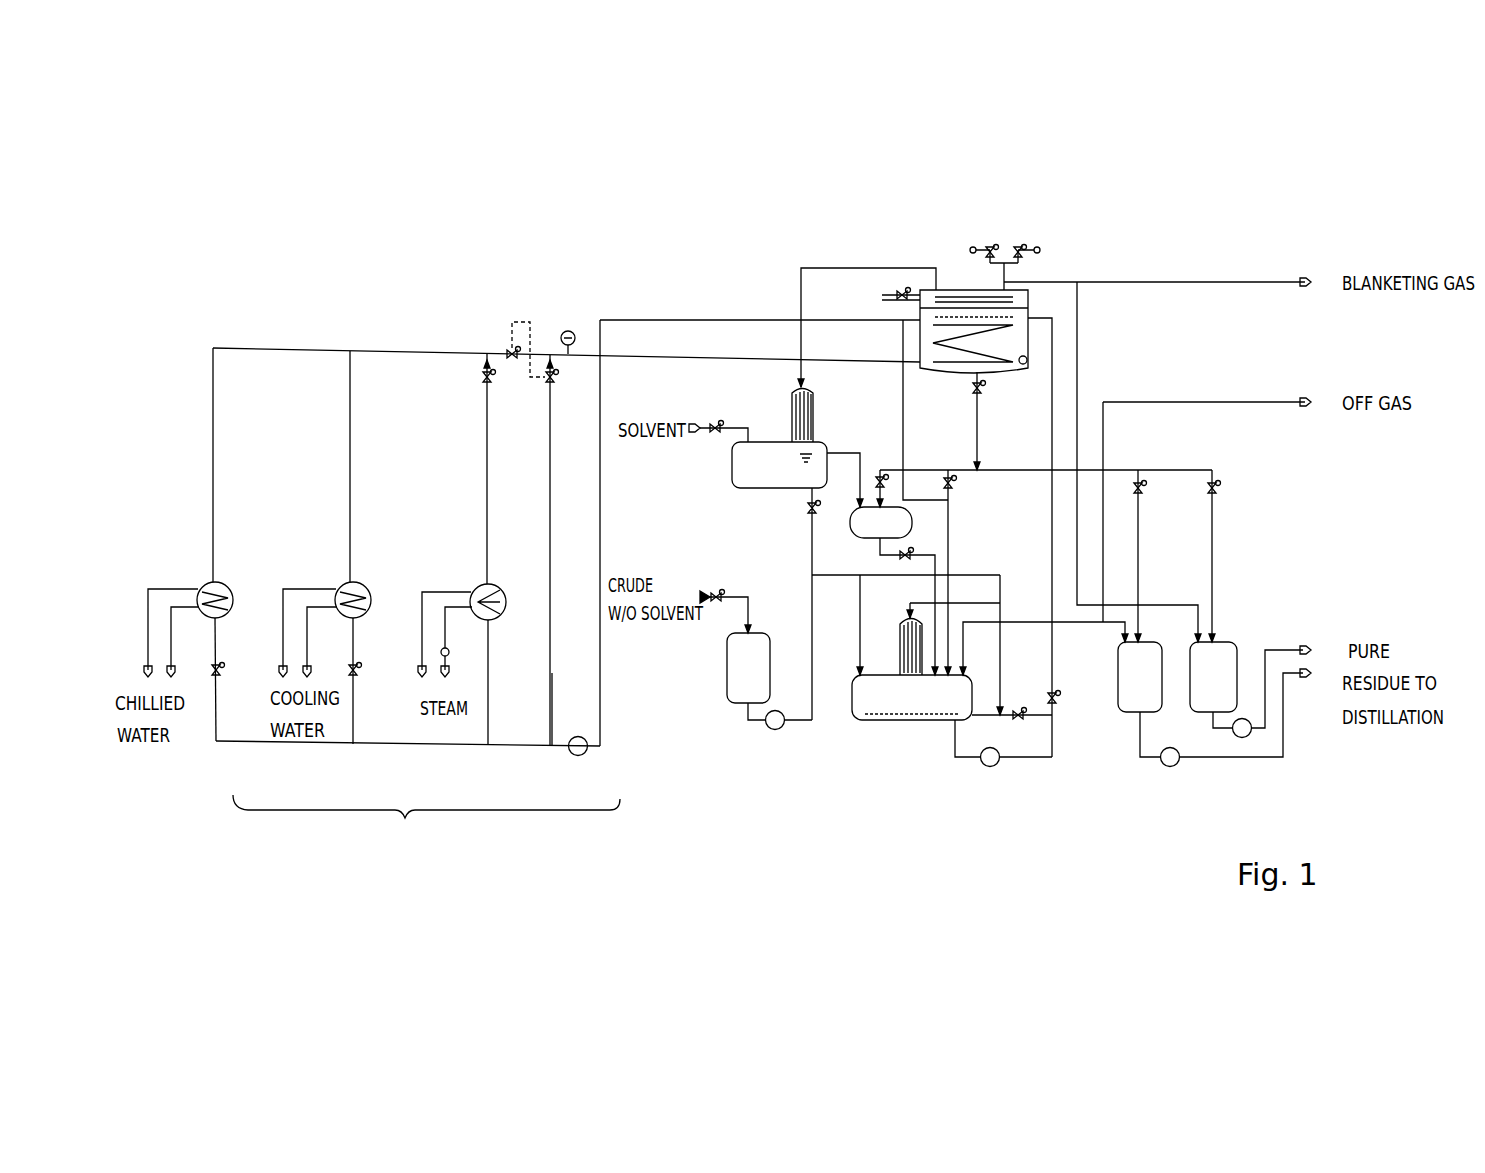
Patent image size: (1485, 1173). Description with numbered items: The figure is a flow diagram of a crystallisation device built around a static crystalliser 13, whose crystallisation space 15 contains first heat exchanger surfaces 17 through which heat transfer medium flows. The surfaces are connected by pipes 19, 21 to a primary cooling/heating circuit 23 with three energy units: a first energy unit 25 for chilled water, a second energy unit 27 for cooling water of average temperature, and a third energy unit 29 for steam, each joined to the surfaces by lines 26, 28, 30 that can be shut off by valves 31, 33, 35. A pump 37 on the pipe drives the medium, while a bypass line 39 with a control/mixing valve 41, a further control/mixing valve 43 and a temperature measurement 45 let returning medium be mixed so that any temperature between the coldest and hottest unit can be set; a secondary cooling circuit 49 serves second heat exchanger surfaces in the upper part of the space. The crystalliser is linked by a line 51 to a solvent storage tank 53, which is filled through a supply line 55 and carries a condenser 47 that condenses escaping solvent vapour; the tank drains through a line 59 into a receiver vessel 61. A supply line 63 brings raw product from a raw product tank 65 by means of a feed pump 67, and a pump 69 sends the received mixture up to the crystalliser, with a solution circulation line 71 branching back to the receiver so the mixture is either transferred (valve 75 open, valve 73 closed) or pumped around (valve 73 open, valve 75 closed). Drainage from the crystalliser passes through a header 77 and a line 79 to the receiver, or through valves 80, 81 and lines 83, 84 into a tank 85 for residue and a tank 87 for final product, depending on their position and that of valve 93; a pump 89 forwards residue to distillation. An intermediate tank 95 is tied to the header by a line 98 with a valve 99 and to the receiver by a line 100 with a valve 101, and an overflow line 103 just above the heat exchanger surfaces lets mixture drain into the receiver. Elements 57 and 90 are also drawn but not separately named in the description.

The static crystalliser 13 is at (1028, 340).
The crystallisation space 15 is at (1028, 367).
The first heat exchanger surfaces 17 is at (985, 363).
The pipe 19 is at (916, 410).
The pipe 21 is at (605, 560).
The primary cooling/heating circuit 23 is at (418, 804).
The first energy unit 25 is at (230, 588).
The line 26 is at (213, 483).
The second energy unit 27 is at (370, 590).
The line 28 is at (350, 493).
The third energy unit 29 is at (498, 590).
The line 30 is at (487, 490).
The valve 31 is at (222, 675).
The valve 33 is at (360, 673).
The valve 35 is at (482, 377).
The pump 37 is at (587, 755).
The bypass line 39 is at (552, 673).
The control/mixing valve 41 is at (556, 377).
The control/mixing valve 43 is at (505, 348).
The temperature measurement 45 is at (565, 328).
The condenser 47 is at (960, 288).
The secondary cooling circuit 49 is at (890, 288).
The line 51 is at (797, 290).
The solvent storage tank 53 is at (730, 475).
The supply line 55 is at (713, 418).
The condenser 57 is at (815, 410).
The line 59 is at (812, 548).
The receiver vessel 61 is at (850, 697).
The supply line 63 is at (812, 627).
The raw product tank 65 is at (722, 672).
The feed pump 67 is at (1052, 540).
The pump 69 is at (998, 763).
The solution circulation line 71 is at (1035, 718).
The valve 73 is at (1015, 700).
The valve 75 is at (1060, 693).
The header 77 is at (993, 468).
The line 79 is at (950, 540).
The valve 80 is at (1148, 484).
The valve 81 is at (1218, 486).
The line 83 is at (1140, 540).
The line 84 is at (1215, 560).
The tank 85 is at (1150, 640).
The tank 87 is at (1237, 640).
The pump 89 is at (1178, 765).
The pump P-6 90 is at (1248, 733).
The valve 93 is at (955, 483).
The intermediate tank 95 is at (912, 522).
The line 98 is at (920, 470).
The valve 99 is at (880, 465).
The line 100 is at (935, 575).
The valve 101 is at (906, 574).
The overflow line 103 is at (905, 413).